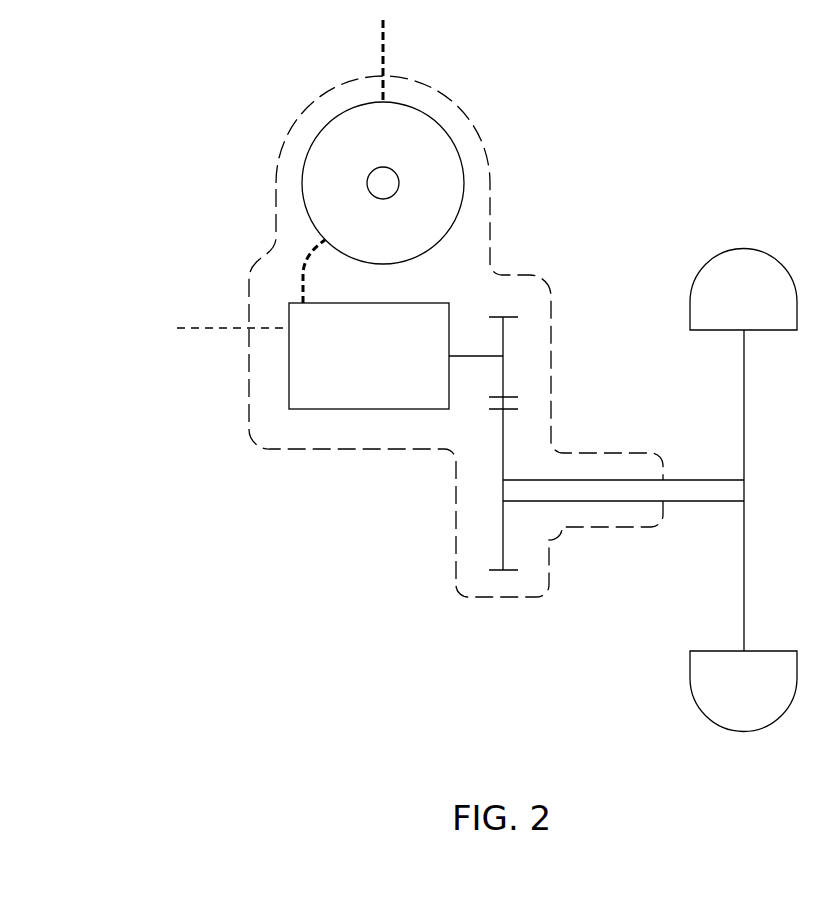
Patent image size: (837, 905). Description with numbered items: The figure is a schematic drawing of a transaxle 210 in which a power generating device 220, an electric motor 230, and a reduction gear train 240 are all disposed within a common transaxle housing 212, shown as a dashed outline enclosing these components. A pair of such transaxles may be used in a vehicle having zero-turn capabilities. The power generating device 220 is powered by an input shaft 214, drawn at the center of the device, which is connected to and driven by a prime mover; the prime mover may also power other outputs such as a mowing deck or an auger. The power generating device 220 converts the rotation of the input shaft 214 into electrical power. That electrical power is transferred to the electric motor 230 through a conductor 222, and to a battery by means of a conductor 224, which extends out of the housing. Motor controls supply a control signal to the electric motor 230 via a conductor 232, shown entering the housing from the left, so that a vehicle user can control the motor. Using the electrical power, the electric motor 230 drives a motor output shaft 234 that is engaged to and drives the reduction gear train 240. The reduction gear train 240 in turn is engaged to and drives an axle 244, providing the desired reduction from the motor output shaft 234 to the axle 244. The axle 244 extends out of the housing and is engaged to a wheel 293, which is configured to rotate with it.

The transaxle 210 is at (126, 74).
The transaxle housing 212 is at (431, 85).
The input shaft 214 is at (386, 172).
The power generating device 220 is at (383, 183).
The conductor 222 is at (306, 273).
The conductor 224 is at (380, 34).
The electric motor 230 is at (369, 356).
The conductor 232 is at (195, 327).
The motor output shaft 234 is at (477, 355).
The reduction gear train 240 is at (536, 378).
The axle 244 is at (712, 502).
The wheel 293 is at (744, 590).